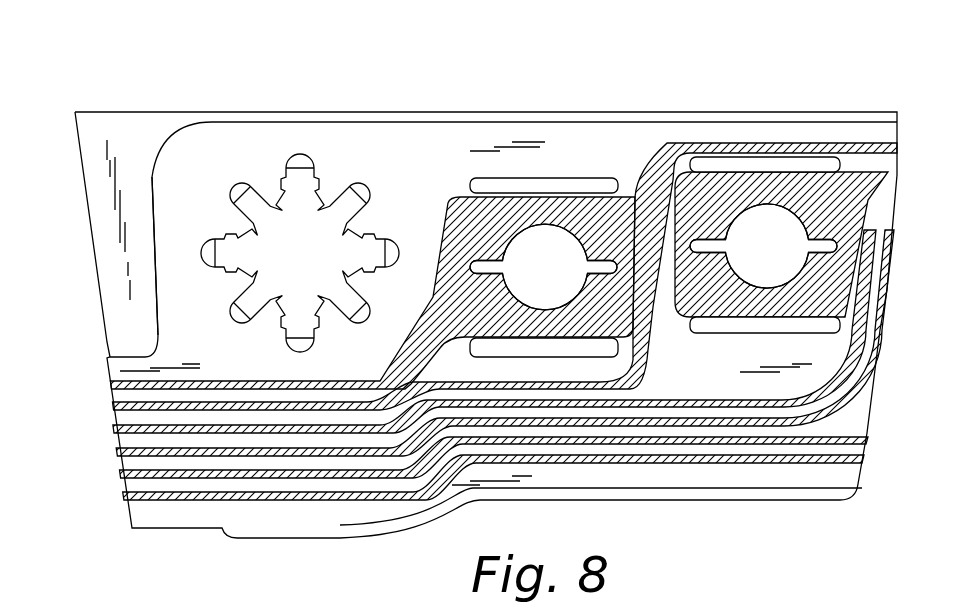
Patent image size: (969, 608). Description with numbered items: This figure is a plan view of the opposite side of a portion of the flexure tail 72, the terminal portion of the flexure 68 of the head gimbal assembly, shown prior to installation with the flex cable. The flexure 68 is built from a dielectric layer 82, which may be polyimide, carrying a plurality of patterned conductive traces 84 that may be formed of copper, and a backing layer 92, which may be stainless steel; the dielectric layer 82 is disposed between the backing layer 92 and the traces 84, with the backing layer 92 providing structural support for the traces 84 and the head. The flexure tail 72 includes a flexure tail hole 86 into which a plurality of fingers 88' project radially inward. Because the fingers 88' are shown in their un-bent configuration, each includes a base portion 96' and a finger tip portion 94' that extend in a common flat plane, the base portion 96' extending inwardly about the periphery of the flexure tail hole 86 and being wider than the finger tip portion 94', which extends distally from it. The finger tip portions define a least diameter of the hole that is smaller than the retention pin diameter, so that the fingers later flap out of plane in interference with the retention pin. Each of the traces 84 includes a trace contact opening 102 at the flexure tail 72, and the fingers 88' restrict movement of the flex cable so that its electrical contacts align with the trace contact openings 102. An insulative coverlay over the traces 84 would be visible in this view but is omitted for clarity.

The flexure 68 is at (386, 80).
The flexure tail 72 is at (442, 78).
The dielectric layer 82 is at (680, 373).
The patterned conductive traces 84 is at (700, 462).
The flexure tail hole 86 is at (370, 192).
The fingers in un-bent configuration 88' is at (299, 250).
The backing layer 92 is at (303, 156).
The finger tip portion in un-bent configuration 94' is at (305, 251).
The base portion in un-bent configuration 96' is at (302, 251).
The trace contact opening 102 is at (550, 220).